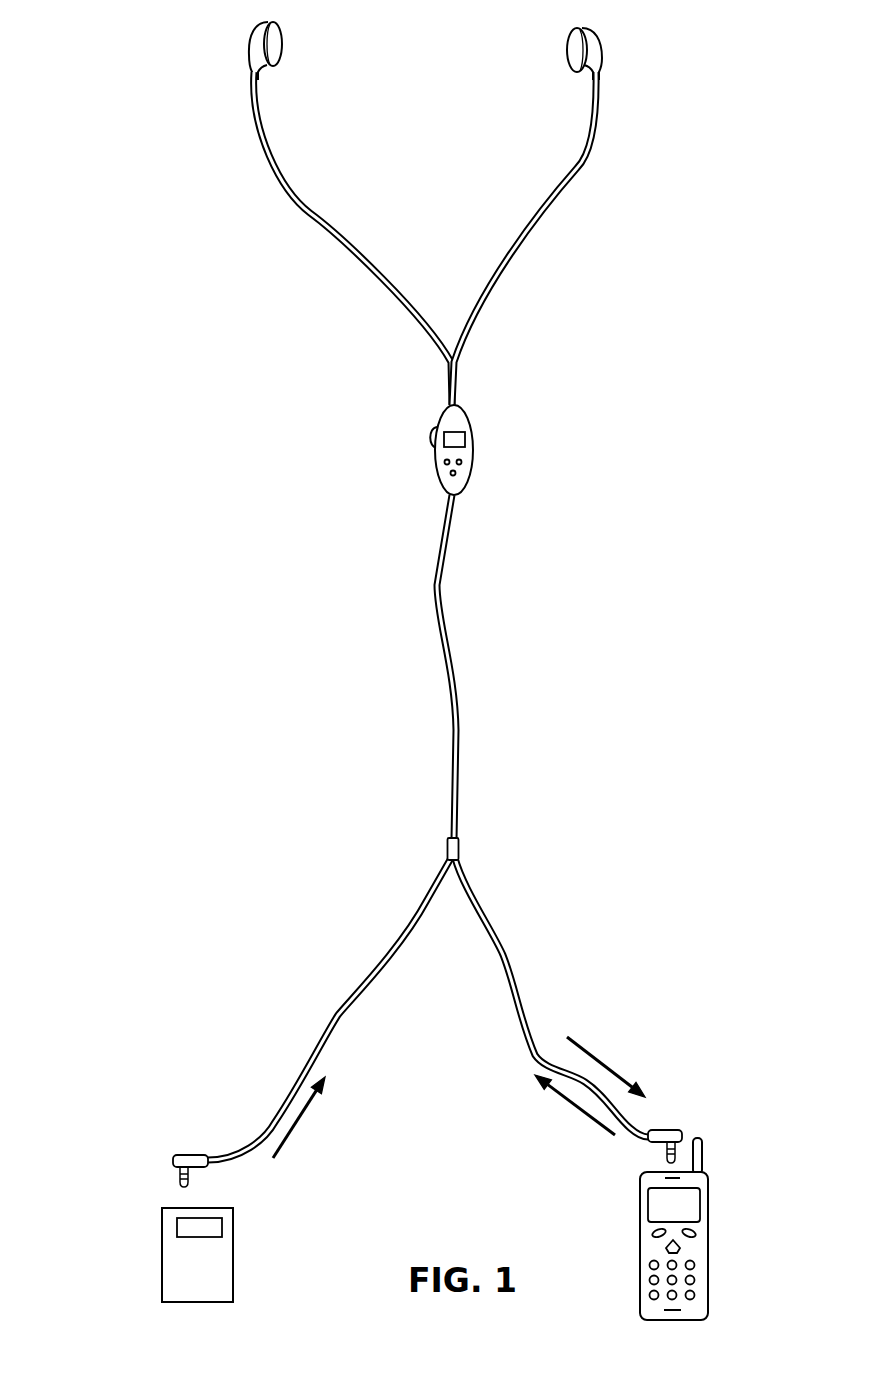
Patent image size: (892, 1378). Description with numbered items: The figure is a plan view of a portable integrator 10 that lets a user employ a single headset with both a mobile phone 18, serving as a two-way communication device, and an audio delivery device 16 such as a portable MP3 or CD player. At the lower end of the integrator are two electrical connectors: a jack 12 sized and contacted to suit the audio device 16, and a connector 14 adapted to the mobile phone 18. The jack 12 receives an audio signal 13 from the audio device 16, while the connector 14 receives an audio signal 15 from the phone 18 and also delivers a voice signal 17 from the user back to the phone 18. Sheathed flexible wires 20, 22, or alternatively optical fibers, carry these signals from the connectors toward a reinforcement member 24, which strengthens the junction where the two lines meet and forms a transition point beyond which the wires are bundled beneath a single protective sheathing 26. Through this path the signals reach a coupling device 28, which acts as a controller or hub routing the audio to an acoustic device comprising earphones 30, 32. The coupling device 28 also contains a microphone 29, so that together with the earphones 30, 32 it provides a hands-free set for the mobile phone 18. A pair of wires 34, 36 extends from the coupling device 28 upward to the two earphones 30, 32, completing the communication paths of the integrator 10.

The portable integrator 10 is at (134, 105).
The jack 12 is at (190, 1155).
The audio signal 13 is at (297, 1130).
The connector 14 is at (665, 1130).
The audio signal 15 is at (578, 1115).
The audio delivery device 16 is at (225, 1270).
The voice signal 17 is at (587, 1050).
The mobile phone 18 is at (703, 1248).
The sheathed flexible wire 20 is at (337, 1012).
The sheathed flexible wire 22 is at (513, 980).
The reinforcement member 24 is at (458, 845).
The single protective sheathing 26 is at (455, 672).
The coupling device 28 is at (474, 453).
The microphone 29 is at (437, 470).
The acoustic device 30 is at (275, 50).
The acoustic device 32 is at (595, 55).
The wire 34 is at (308, 215).
The wire 36 is at (580, 168).